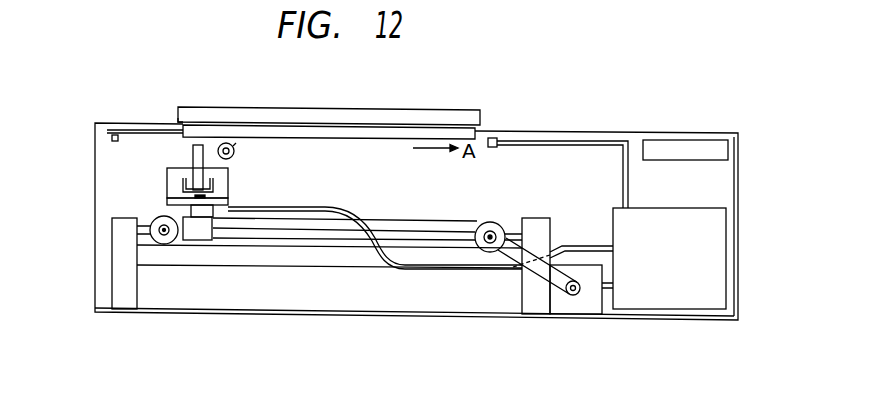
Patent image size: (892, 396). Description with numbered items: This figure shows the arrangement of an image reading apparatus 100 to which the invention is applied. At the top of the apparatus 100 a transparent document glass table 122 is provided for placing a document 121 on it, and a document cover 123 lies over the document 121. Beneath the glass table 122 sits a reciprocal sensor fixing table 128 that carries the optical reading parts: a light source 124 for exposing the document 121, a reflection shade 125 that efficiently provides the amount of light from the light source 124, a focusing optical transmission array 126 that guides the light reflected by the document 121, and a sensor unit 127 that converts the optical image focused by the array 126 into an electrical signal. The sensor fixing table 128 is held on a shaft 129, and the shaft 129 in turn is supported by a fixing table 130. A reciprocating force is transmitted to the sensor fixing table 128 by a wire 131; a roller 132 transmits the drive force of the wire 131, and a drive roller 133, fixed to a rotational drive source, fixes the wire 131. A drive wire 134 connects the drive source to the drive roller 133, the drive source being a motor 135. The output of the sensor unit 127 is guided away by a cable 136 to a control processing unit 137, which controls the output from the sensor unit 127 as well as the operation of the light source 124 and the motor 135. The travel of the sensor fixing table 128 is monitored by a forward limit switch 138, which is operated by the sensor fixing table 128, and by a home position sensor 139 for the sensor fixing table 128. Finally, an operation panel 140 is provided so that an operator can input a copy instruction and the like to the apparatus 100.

The image reading apparatus 100 is at (710, 130).
The document 121 is at (180, 122).
The transparent document glass table 122 is at (340, 139).
The document cover 123 is at (220, 112).
The light source 124 is at (234, 147).
The reflection shade 125 is at (228, 160).
The focusing optical transmission array 126 is at (193, 147).
The sensor unit 127 is at (228, 191).
The reciprocal sensor fixing table 128 is at (167, 194).
The shaft 129 is at (440, 228).
The fixing table 130 is at (147, 302).
The wire 131 is at (270, 250).
The roller 132 is at (140, 218).
The drive roller 133 is at (495, 222).
The drive wire 134 is at (537, 282).
The motor 135 is at (580, 322).
The cable 136 is at (330, 200).
The control processing unit 137 is at (655, 208).
The forward limit switch 138 is at (493, 137).
The home position sensor 139 is at (112, 138).
The operation panel 140 is at (728, 150).